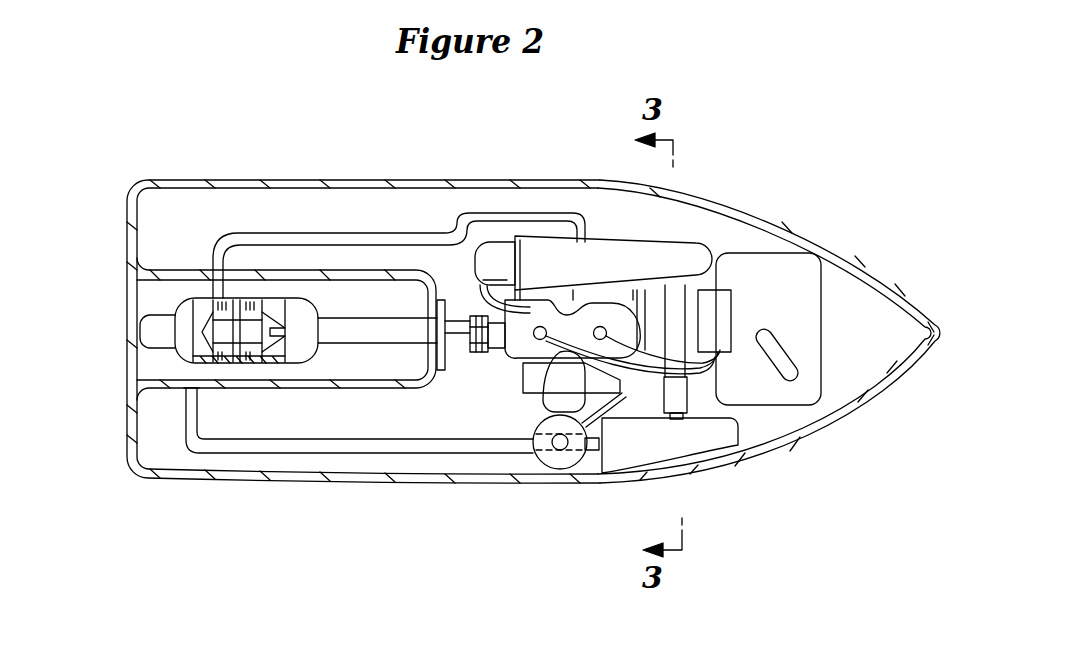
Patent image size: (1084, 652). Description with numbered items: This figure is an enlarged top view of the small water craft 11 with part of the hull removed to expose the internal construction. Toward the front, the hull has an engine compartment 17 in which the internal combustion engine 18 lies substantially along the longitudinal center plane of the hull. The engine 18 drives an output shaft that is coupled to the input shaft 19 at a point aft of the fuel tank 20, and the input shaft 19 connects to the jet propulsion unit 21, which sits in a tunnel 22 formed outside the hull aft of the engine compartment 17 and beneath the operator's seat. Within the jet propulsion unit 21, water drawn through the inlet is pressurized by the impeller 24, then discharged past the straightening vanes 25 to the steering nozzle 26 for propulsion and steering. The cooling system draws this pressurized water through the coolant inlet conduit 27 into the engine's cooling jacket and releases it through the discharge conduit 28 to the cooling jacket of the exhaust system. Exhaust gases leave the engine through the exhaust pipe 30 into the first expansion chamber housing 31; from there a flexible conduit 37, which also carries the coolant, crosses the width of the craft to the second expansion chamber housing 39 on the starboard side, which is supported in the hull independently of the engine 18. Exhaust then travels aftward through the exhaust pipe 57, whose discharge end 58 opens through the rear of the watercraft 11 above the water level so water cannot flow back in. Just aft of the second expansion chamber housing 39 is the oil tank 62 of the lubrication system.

The water craft 11 is at (395, 180).
The engine compartment 17 is at (886, 347).
The internal combustion engine 18 is at (517, 370).
The input shaft 19 is at (452, 385).
The fuel tank 20 is at (788, 307).
The jet propulsion unit 21 is at (155, 474).
The tunnel 22 is at (160, 286).
The impeller 24 is at (258, 345).
The straightening vanes 25 is at (227, 345).
The steering nozzle 26 is at (148, 330).
The coolant inlet conduit 27 is at (268, 233).
The discharge conduit 28 is at (483, 297).
The exhaust pipe 30 is at (497, 250).
The first expansion chamber housing 31 is at (693, 252).
The flexible conduit 37 is at (680, 380).
The second expansion chamber housing 39 is at (612, 470).
The exhaust pipe 57 is at (393, 455).
The discharge end 58 is at (186, 392).
The oil tank 62 is at (537, 450).